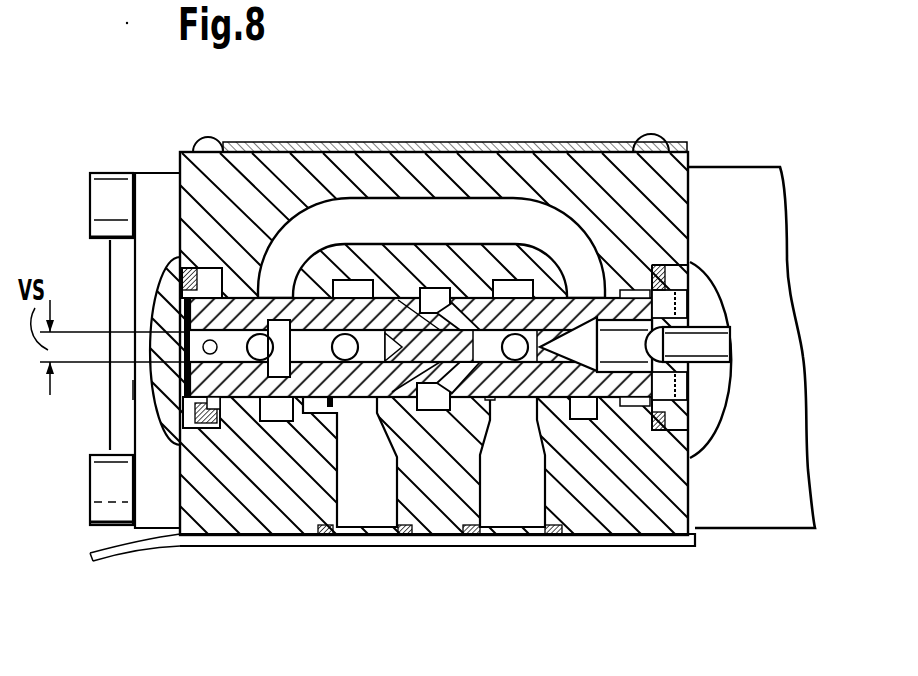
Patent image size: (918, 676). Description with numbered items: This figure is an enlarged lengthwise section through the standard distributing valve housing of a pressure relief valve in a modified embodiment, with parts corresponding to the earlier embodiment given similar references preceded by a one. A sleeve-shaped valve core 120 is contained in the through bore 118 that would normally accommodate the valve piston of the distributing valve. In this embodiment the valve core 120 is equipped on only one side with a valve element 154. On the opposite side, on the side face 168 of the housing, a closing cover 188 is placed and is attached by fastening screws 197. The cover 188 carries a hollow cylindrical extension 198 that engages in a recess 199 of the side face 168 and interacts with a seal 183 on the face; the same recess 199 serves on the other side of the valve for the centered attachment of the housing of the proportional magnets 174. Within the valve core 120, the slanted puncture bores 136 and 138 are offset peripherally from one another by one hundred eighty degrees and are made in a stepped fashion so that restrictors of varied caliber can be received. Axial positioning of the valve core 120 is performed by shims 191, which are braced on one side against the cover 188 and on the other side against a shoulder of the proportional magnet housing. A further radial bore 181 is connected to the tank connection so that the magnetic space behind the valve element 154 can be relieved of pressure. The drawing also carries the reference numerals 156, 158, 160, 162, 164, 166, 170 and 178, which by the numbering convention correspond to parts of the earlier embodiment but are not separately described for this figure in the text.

The through bore 118 is at (492, 420).
The sleeve-shaped valve core 120 is at (340, 430).
The slanted puncture bore 136 is at (418, 410).
The slanted puncture bore 138 is at (462, 305).
The valve element 154 is at (697, 277).
The annular channel 156 is at (290, 296).
The sealing ring 158 is at (552, 292).
The valve sleeve 160 is at (276, 398).
The sealing ring 162 is at (594, 419).
The valve ball 164 is at (347, 336).
The valve ball 166 is at (515, 336).
The side face 168 is at (180, 225).
The housing top wall 170 is at (688, 190).
The proportional magnets 174 is at (770, 410).
The actuating rod 178 is at (703, 342).
The radial bore 181 is at (180, 396).
The seal 183 is at (222, 420).
The closing cover 188 is at (125, 388).
The shims 191 is at (145, 311).
The fastening screws 197 is at (107, 487).
The hollow cylindrical extension 198 is at (190, 420).
The recess 199 is at (197, 272).